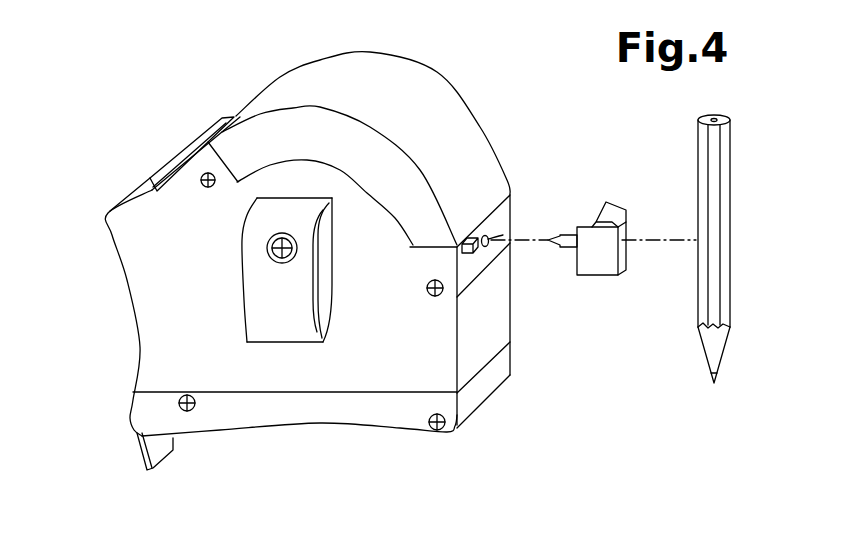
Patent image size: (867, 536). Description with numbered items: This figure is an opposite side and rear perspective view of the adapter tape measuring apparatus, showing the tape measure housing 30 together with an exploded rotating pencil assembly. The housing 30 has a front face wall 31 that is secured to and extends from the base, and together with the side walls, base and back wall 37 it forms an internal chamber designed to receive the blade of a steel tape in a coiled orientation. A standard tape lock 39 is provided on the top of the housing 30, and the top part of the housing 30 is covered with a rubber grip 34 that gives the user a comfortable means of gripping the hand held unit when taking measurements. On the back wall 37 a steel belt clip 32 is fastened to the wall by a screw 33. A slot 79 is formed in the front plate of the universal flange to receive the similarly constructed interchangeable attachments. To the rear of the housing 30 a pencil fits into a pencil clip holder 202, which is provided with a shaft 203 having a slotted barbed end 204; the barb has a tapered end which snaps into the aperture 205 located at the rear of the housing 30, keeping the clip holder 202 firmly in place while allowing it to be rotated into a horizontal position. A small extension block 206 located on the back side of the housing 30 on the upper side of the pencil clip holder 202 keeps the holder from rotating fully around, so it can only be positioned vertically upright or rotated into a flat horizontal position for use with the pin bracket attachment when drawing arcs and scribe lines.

The tape measure housing 30 is at (485, 412).
The front face wall 31 is at (128, 296).
The steel belt clip 32 is at (297, 330).
The screw 33 is at (266, 252).
The rubber grip 34 is at (430, 88).
The back wall 37 is at (477, 345).
The tape lock 39 is at (190, 130).
The slot 79 is at (147, 470).
The pencil clip holder 202 is at (607, 205).
The shaft 203 is at (551, 235).
The slotted barbed end 204 is at (549, 246).
The aperture 205 is at (511, 195).
The extension block 206 is at (470, 278).